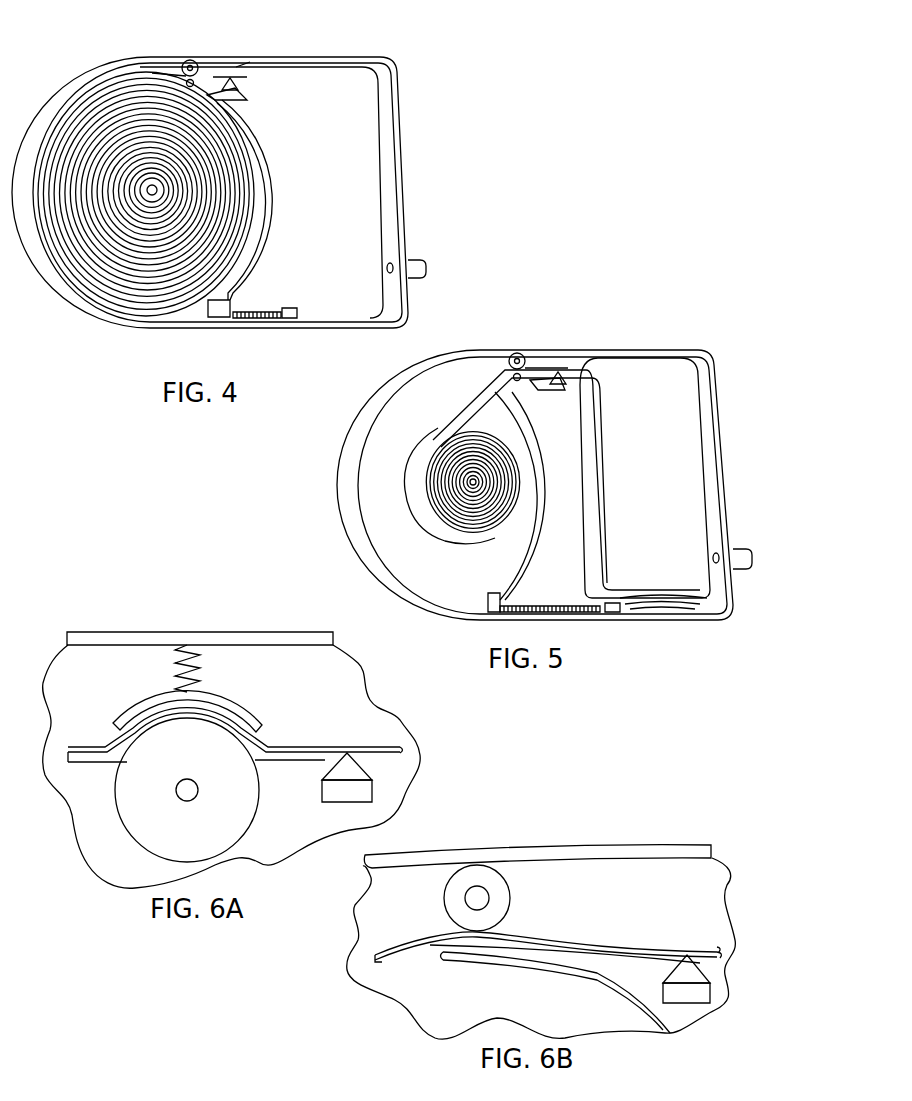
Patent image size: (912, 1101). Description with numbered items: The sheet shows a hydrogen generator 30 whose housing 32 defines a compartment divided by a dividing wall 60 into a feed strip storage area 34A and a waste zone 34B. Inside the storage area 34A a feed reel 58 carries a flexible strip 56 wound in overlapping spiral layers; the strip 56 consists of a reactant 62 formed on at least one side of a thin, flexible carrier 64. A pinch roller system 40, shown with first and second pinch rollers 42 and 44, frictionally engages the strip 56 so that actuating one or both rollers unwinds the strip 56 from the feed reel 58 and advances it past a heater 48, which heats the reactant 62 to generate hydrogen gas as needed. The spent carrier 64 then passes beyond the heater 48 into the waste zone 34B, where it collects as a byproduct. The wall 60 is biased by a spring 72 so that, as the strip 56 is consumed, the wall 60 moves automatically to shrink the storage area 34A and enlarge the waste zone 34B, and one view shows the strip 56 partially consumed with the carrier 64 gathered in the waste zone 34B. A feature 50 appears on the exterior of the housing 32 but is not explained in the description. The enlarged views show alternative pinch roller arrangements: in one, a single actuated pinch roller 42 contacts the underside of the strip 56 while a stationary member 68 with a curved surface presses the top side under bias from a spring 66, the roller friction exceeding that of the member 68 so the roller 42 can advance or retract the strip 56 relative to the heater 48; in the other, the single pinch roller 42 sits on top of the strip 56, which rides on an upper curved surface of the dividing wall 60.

In FIG. 4, the hydrogen generator 30 is at (410, 39).
In FIG. 5, the hydrogen generator 30 is at (648, 324).
In FIG. 4, the housing 32 is at (398, 65).
In FIG. 5, the housing 32 is at (710, 352).
In FIG. 6A, the housing 32 is at (250, 632).
In FIG. 6B, the housing 32 is at (608, 843).
In FIG. 4, the storage area 34A is at (195, 302).
In FIG. 5, the storage area 34A is at (440, 590).
In FIG. 4, the waste zone 34B is at (355, 150).
In FIG. 5, the waste zone 34B is at (678, 415).
In FIG. 4, the pinch roller system 40 is at (245, 45).
In FIG. 5, the pinch roller system 40 is at (478, 373).
In FIG. 6A, the pinch roller system 40 is at (118, 692).
In FIG. 6B, the pinch roller system 40 is at (535, 887).
In FIG. 4, the first pinch roller 42 is at (181, 64).
In FIG. 5, the first pinch roller 42 is at (510, 356).
In FIG. 6A, the first pinch roller 42 is at (152, 828).
In FIG. 6B, the first pinch roller 42 is at (450, 894).
In FIG. 4, the second pinch roller 44 is at (192, 80).
In FIG. 5, the second pinch roller 44 is at (518, 374).
In FIG. 4, the heater 48 is at (240, 88).
In FIG. 5, the heater 48 is at (562, 374).
In FIG. 6A, the heater 48 is at (370, 770).
In FIG. 6B, the heater 48 is at (708, 972).
In FIG. 4, the button 50 is at (412, 260).
In FIG. 5, the button 50 is at (740, 567).
In FIG. 4, the flexible strip 56 is at (82, 105).
In FIG. 5, the flexible strip 56 is at (440, 450).
In FIG. 6A, the flexible strip 56 is at (72, 748).
In FIG. 6B, the flexible strip 56 is at (375, 957).
In FIG. 4, the feed reel 58 is at (154, 188).
In FIG. 5, the feed reel 58 is at (481, 482).
In FIG. 4, the dividing wall 60 is at (270, 232).
In FIG. 5, the dividing wall 60 is at (535, 418).
In FIG. 6B, the dividing wall 60 is at (517, 963).
In FIG. 4, the reactant 62 is at (222, 76).
In FIG. 5, the reactant 62 is at (548, 379).
In FIG. 6A, the reactant 62 is at (292, 761).
In FIG. 6B, the reactant 62 is at (630, 964).
In FIG. 4, the carrier 64 is at (248, 62).
In FIG. 5, the carrier 64 is at (668, 590).
In FIG. 6A, the carrier 64 is at (368, 745).
In FIG. 6B, the carrier 64 is at (705, 950).
In FIG. 6A, the spring 66 is at (205, 665).
In FIG. 6A, the stationary member 68 is at (248, 710).
In FIG. 4, the spring 72 is at (252, 312).
In FIG. 5, the spring 72 is at (530, 606).